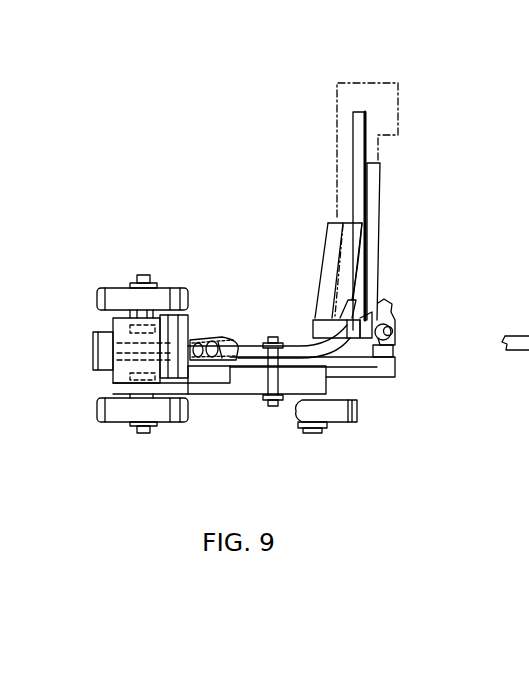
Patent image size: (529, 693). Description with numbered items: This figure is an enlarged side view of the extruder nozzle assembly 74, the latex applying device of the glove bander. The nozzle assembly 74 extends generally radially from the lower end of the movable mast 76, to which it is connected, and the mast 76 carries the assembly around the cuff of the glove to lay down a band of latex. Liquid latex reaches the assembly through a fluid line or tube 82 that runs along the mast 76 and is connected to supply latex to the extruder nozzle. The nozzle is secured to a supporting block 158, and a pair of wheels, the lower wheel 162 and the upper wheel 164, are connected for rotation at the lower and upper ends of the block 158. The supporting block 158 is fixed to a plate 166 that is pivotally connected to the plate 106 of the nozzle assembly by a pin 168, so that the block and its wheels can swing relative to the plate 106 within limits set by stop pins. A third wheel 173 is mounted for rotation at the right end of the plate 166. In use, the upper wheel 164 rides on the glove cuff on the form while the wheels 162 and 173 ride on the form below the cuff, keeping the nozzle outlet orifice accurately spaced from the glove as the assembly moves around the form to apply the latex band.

The extruder nozzle assembly 74 is at (218, 212).
The movable mast 76 is at (403, 92).
The fluid line or tube 82 is at (367, 120).
The plate 106 is at (395, 369).
The supporting block 158 is at (125, 367).
The wheel 162 is at (122, 410).
The wheel 164 is at (113, 299).
The plate 166 is at (213, 396).
The pin 168 is at (275, 401).
The third wheel 173 is at (347, 424).